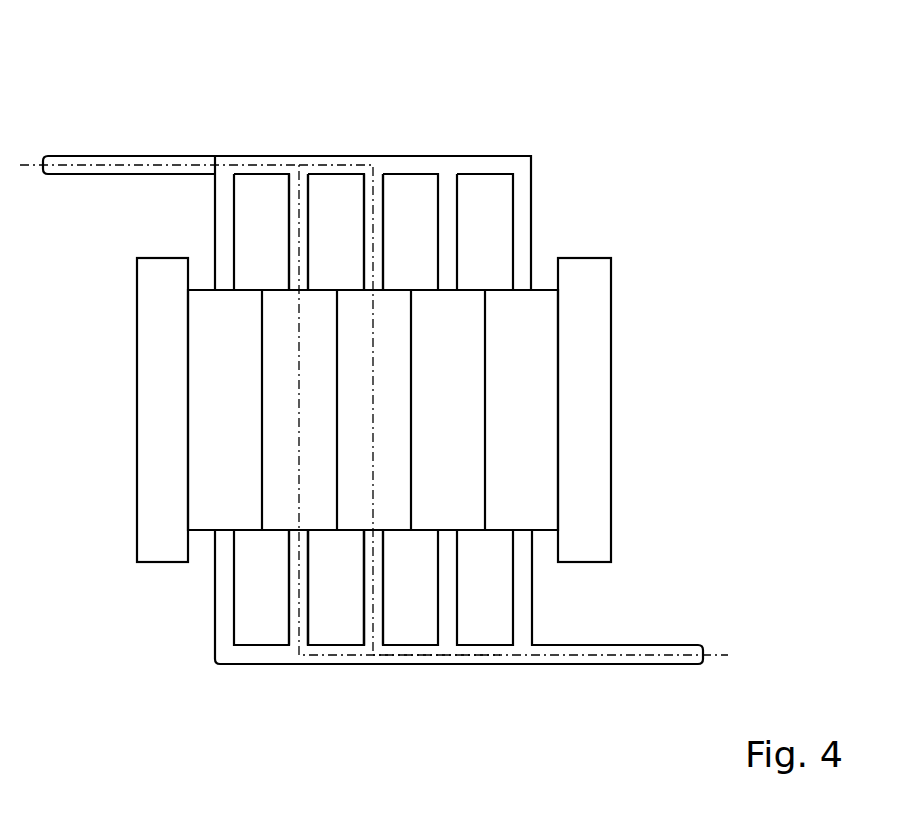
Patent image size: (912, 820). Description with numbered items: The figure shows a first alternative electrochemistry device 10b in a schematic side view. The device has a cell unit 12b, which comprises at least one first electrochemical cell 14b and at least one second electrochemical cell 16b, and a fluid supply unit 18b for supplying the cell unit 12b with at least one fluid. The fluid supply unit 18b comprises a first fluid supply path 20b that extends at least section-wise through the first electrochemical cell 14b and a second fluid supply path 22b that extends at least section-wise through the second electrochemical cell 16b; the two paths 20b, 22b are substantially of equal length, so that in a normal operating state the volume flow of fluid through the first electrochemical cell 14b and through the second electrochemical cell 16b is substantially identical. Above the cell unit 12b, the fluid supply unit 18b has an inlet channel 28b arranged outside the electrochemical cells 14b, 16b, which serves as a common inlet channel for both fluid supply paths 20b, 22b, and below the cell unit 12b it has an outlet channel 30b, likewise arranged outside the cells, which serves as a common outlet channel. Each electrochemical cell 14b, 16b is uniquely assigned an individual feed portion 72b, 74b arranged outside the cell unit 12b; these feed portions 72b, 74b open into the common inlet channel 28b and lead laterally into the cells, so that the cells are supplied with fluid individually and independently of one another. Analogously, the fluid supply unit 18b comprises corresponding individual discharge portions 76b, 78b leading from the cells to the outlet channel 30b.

The first alternative electrochemistry device 10b is at (372, 384).
The cell unit 12b is at (548, 256).
The first electrochemical cell 14b is at (275, 532).
The second electrochemical cell 16b is at (352, 532).
The fluid supply unit 18b is at (287, 154).
The first fluid supply path 20b is at (299, 340).
The second fluid supply path 22b is at (373, 422).
The inlet channel 28b is at (343, 156).
The outlet channel 30b is at (453, 640).
The feed portion 72b is at (290, 227).
The feed portion 74b is at (384, 227).
The discharge portion 76b is at (289, 578).
The discharge portion 78b is at (383, 578).